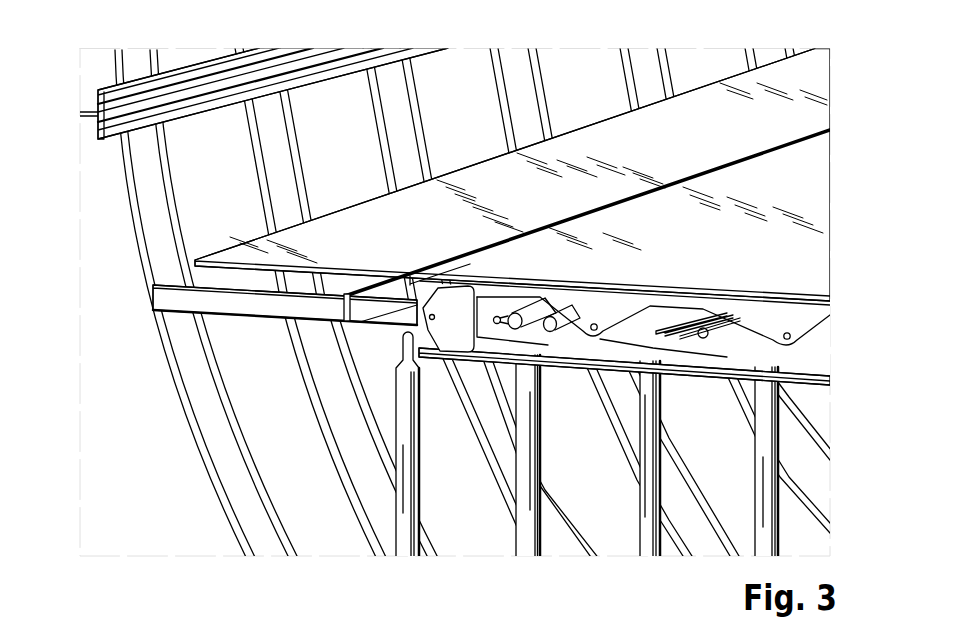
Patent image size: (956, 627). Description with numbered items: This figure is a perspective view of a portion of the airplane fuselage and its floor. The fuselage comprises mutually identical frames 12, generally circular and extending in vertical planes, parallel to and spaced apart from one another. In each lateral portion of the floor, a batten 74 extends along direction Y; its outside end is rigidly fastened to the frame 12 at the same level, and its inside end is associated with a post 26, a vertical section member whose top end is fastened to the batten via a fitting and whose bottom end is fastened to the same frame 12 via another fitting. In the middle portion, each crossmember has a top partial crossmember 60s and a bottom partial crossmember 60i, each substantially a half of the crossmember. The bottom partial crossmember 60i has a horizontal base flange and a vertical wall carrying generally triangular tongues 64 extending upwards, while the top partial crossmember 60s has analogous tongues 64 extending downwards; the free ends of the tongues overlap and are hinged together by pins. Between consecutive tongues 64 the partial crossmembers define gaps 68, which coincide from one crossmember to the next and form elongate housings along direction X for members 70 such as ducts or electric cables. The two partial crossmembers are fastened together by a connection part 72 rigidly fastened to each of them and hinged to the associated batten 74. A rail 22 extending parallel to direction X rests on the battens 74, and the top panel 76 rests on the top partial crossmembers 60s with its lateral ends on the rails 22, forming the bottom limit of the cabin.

The frame 12 is at (152, 197).
The rail 22 is at (343, 308).
The post 26 is at (403, 527).
The top partial crossmember 60s is at (795, 327).
The bottom partial crossmember 60i is at (800, 360).
The tongue 64 is at (769, 318).
The gap 68 is at (682, 362).
The member 70 is at (703, 338).
The connection part 72 is at (463, 338).
The batten 74 is at (174, 302).
The top panel 76 is at (627, 142).